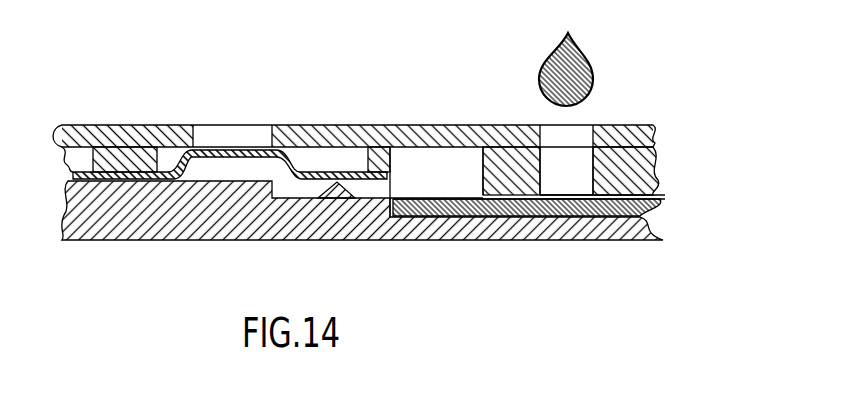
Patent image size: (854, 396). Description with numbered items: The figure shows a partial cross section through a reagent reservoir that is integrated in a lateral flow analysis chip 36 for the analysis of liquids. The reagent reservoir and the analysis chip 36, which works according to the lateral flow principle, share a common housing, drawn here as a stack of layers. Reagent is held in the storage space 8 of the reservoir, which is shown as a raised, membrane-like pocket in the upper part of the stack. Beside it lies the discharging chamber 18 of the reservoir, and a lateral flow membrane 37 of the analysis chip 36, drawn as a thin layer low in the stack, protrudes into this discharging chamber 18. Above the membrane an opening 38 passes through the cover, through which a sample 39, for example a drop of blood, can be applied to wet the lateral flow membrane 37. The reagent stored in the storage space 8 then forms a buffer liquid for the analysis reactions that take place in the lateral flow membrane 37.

The storage space 8 is at (213, 170).
The discharging chamber 18 is at (422, 160).
The analysis chip 36 is at (641, 113).
The lateral flow membrane 37 is at (478, 203).
The opening 38 is at (548, 125).
The sample 39 is at (595, 68).